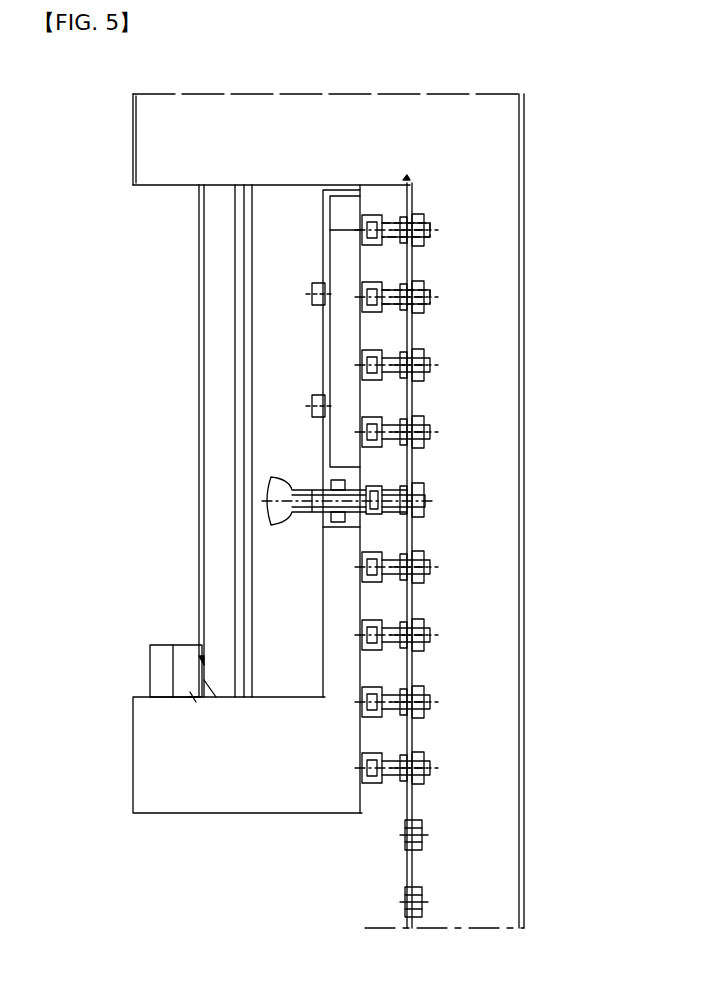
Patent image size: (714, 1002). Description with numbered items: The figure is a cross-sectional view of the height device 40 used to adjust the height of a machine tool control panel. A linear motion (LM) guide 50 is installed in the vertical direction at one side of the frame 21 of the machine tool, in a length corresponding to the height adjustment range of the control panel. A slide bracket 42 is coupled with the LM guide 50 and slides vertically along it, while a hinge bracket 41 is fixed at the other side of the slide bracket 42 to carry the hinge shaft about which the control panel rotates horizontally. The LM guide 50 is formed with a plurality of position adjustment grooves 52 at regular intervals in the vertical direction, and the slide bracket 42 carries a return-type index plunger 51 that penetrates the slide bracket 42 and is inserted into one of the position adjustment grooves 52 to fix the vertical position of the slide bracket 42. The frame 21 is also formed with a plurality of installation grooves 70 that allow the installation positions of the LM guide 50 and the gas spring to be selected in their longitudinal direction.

The frame 21 is at (500, 201).
The height device 40 is at (563, 490).
The hinge bracket 41 is at (157, 767).
The slide bracket 42 is at (340, 330).
The linear motion (LM) guide 50 is at (393, 330).
The return-type index plunger 51 is at (275, 499).
The position adjustment grooves 52 is at (368, 499).
The installation grooves 70 is at (423, 830).